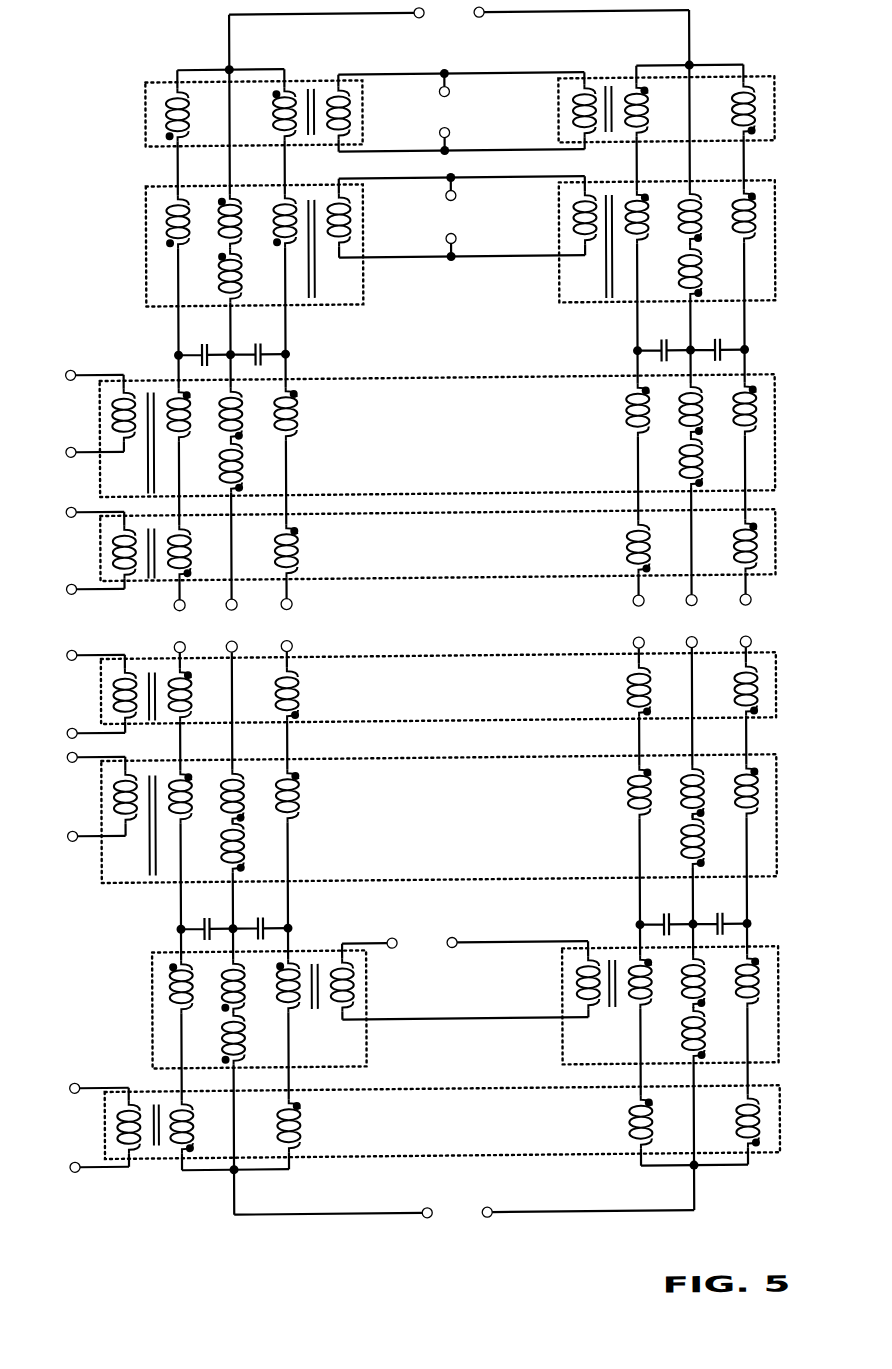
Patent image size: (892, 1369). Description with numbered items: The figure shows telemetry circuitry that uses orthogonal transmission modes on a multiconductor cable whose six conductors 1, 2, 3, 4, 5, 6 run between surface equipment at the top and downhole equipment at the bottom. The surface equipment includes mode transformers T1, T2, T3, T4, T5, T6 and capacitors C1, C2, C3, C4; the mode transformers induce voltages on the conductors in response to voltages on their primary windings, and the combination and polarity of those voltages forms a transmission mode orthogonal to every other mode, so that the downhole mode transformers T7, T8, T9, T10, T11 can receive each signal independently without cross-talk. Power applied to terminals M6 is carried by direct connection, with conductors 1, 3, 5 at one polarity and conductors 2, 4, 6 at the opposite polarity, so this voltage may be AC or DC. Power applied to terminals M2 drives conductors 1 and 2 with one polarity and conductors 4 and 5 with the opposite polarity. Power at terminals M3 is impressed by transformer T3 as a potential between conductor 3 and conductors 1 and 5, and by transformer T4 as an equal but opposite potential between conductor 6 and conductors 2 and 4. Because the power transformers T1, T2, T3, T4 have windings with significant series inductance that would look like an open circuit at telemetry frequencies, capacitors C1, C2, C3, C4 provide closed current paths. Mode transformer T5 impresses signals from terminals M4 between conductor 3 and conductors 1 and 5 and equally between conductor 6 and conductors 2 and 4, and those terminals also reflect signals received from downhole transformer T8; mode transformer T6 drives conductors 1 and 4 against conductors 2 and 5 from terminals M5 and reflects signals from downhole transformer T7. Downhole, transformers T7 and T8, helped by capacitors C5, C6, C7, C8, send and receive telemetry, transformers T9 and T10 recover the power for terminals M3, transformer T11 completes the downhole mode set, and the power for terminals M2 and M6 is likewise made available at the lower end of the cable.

The mode transformer T1 is at (145, 136).
The mode transformer T2 is at (775, 134).
The mode transformer T3 is at (147, 240).
The mode transformer T4 is at (776, 238).
The mode transformer T5 is at (773, 433).
The mode transformer T6 is at (773, 563).
The mode transformer T7 is at (772, 716).
The mode transformer T8 is at (772, 813).
The transformer T9 is at (146, 993).
The transformer T10 is at (774, 995).
The mode transformer T11 is at (775, 1148).
The capacitor C1 is at (204, 342).
The capacitor C2 is at (257, 341).
The capacitor C3 is at (663, 337).
The capacitor C4 is at (717, 337).
The capacitor C5 is at (207, 917).
The capacitor C6 is at (260, 916).
The capacitor C7 is at (666, 912).
The capacitor C8 is at (720, 912).
The terminals M2 (mode M2) M2 is at (321, 620).
The terminals M3 (mode M3) M3 is at (464, 596).
The terminals M4 (mode M4) M4 is at (86, 606).
The terminals M5 (mode M5) M5 is at (86, 623).
The terminals M6 (mode M6) M6 is at (461, 614).
The conductor 1 is at (179, 626).
The conductor 2 is at (745, 620).
The conductor 3 is at (231, 625).
The conductor 4 is at (638, 621).
The conductor 5 is at (286, 625).
The conductor 6 is at (691, 621).